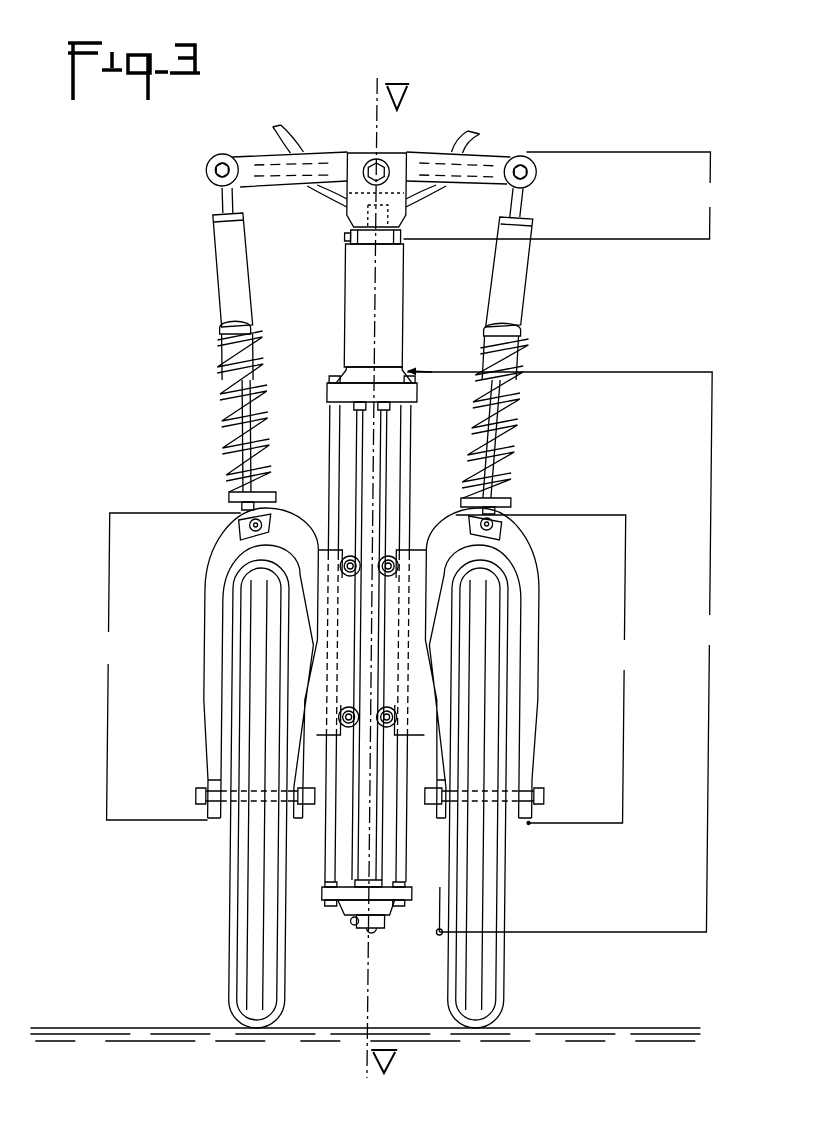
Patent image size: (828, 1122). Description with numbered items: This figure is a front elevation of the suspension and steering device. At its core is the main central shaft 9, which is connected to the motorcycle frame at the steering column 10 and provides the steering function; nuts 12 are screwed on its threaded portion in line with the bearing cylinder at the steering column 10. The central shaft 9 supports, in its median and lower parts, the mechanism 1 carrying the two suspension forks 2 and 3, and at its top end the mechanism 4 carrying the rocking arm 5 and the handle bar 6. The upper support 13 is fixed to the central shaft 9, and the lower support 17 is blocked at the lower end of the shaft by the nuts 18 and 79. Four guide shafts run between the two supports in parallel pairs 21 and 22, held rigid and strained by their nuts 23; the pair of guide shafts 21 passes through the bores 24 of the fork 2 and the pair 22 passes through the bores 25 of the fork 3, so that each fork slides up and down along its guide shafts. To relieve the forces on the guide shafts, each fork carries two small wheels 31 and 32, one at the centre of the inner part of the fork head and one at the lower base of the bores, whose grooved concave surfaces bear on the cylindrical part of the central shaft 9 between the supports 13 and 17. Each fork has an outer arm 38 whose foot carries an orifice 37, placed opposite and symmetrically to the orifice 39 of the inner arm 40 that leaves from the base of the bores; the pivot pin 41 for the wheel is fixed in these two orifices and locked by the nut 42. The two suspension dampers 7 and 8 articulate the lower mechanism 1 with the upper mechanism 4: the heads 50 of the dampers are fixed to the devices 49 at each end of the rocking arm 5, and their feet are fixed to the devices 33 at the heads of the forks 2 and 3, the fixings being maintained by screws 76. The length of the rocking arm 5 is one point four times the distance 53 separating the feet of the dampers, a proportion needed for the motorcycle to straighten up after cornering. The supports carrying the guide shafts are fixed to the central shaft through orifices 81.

The mechanism carrying the suspension forks 1 is at (559, 651).
The suspension fork 2 is at (543, 670).
The suspension fork 3 is at (170, 666).
The mechanism carrying the rocking arm and handle bar 4 is at (560, 195).
The rocking arm 5 is at (324, 166).
The handle bar 6 is at (452, 146).
The suspension damper 7 is at (508, 287).
The suspension damper 8 is at (232, 281).
The main central shaft 9 is at (372, 442).
The steering column 10 is at (362, 284).
The nuts 12 is at (341, 236).
The upper support 13 is at (324, 393).
The lower support 17 is at (325, 893).
The nut 18 is at (356, 925).
The pair of guide shafts 21 is at (400, 461).
The pair of guide shafts 22 is at (336, 460).
The nuts 23 is at (418, 383).
The bores 24 is at (403, 588).
The bores 25 is at (333, 615).
The small wheel 31 is at (350, 552).
The small wheel 32 is at (350, 704).
The device for fixing the damper feet 33 is at (238, 508).
The orifice 37 is at (207, 790).
The outer arm 38 is at (212, 646).
The orifice 39 is at (290, 797).
The inner arm 40 is at (432, 768).
The pivot pin 41 is at (198, 797).
The nut 42 is at (204, 807).
The device for fixing the damper heads 49 is at (216, 153).
The heads of the suspension dampers 50 is at (220, 206).
The distance separating the damper feet 53 is at (470, 514).
The screws 76 is at (210, 172).
The nut 79 is at (370, 880).
The orifices 81 is at (368, 903).